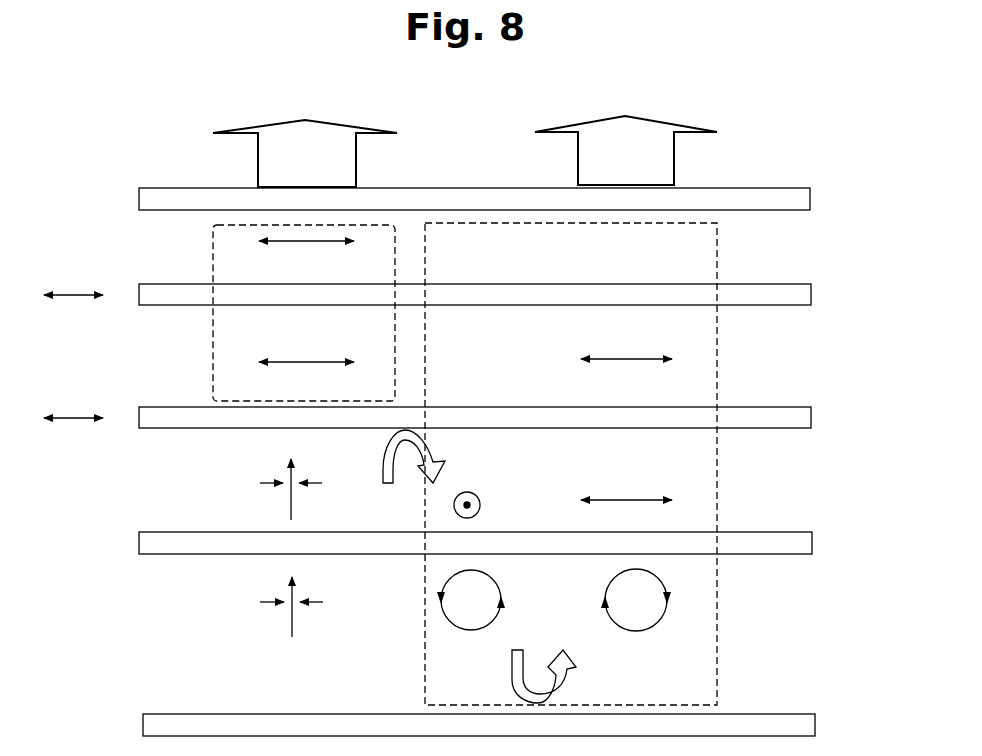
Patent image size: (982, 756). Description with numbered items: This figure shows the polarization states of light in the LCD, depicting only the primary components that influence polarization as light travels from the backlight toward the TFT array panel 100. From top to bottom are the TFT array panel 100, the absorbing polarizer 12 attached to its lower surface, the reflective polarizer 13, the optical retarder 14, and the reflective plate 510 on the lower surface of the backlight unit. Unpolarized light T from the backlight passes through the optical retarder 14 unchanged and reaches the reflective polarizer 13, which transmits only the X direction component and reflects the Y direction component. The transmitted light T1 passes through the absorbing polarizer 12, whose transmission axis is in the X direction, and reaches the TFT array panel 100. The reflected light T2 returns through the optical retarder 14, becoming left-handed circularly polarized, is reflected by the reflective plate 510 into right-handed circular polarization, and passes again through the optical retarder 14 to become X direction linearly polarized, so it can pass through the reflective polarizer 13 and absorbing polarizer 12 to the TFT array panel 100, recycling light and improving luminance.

The TFT array panel 100 is at (810, 197).
The absorbing polarizer 12 is at (811, 292).
The reflective polarizer 13 is at (811, 415).
The optical retarder 14 is at (812, 541).
The reflective plate 510 is at (815, 723).
The transmitted light T1 is at (304, 313).
The reflected light T2 is at (550, 464).
The light T is at (288, 570).